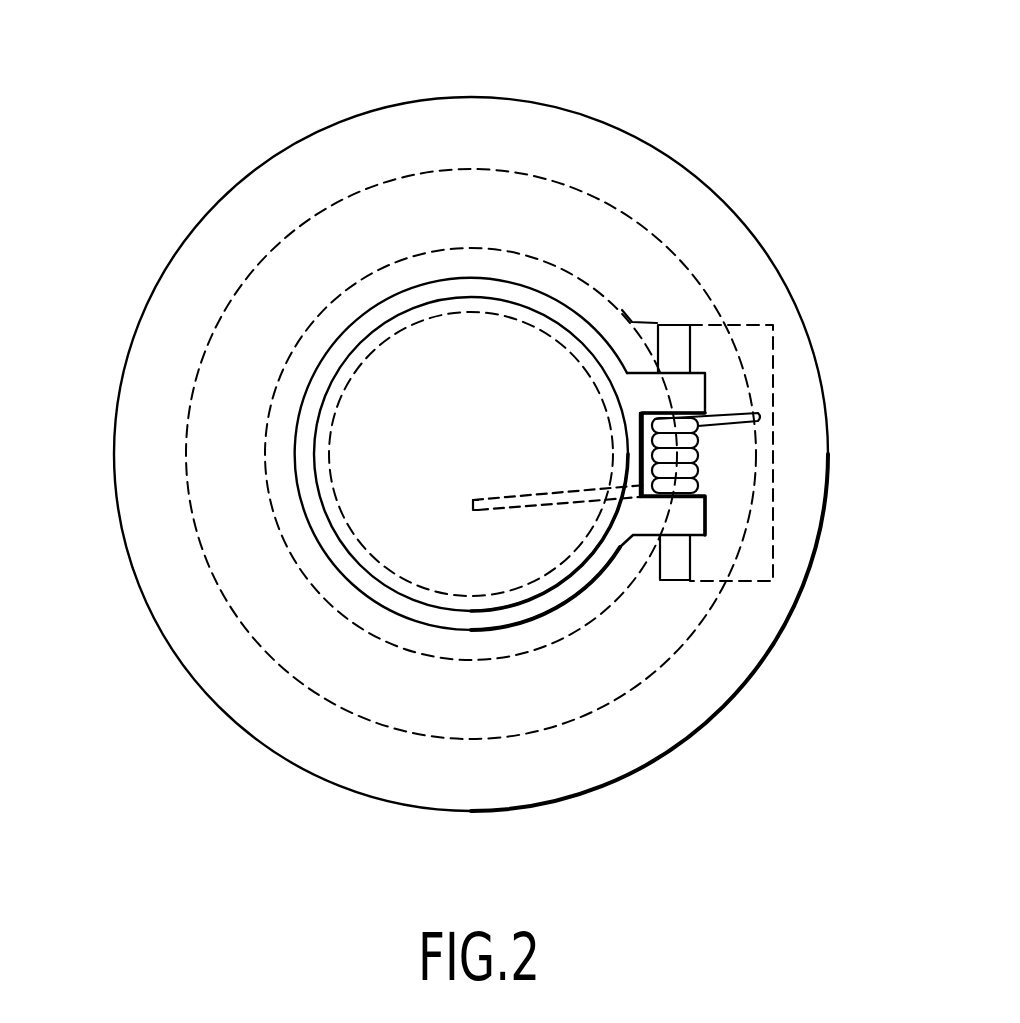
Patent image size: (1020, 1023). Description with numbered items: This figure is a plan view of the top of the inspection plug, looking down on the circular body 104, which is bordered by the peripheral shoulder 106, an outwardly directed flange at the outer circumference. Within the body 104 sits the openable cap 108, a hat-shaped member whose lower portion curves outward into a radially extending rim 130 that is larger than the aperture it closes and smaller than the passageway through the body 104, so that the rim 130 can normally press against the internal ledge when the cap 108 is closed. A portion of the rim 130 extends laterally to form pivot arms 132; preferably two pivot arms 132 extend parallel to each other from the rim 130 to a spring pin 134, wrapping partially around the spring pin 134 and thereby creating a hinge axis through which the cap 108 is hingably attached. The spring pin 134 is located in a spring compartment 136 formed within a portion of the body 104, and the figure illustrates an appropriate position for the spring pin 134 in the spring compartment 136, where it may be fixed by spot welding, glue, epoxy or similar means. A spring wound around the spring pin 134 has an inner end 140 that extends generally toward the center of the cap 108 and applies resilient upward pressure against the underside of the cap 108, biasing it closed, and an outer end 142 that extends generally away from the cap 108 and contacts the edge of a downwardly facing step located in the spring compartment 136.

The body 104 is at (480, 660).
The peripheral shoulder 106 is at (638, 168).
The openable cap 108 is at (340, 437).
The radially extending rim 130 is at (597, 342).
The pivot arms 132 is at (673, 523).
The spring pin 134 is at (680, 353).
The spring compartment 136 is at (733, 367).
The inner end 140 is at (527, 505).
The outer end 142 is at (745, 418).